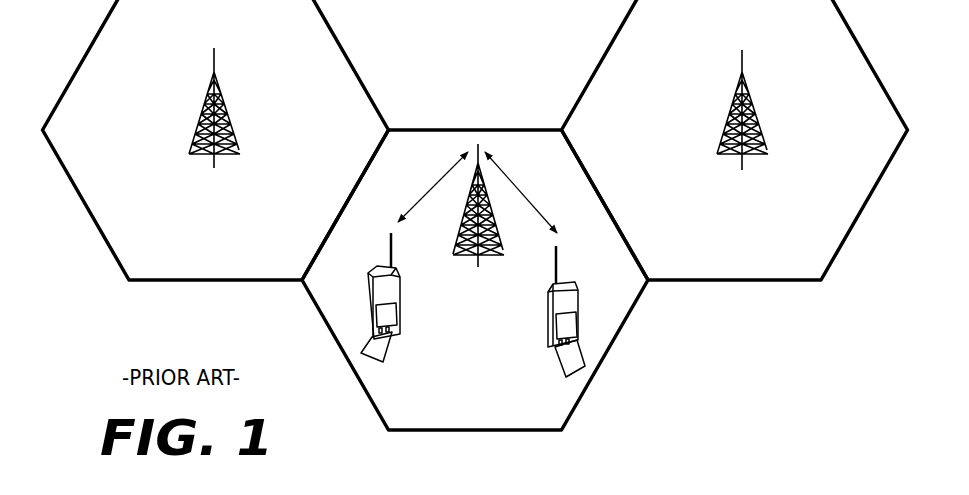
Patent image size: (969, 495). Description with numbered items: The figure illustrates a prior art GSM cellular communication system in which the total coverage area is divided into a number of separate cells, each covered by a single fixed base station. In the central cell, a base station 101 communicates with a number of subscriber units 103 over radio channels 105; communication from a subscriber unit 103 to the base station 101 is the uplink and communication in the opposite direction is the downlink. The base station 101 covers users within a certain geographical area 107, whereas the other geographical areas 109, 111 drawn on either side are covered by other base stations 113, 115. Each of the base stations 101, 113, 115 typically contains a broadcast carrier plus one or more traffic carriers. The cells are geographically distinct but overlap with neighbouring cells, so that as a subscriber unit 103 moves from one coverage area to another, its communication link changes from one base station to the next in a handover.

The base station 101 is at (470, 252).
The subscriber units 103 is at (370, 280).
The radio channels 105 is at (440, 183).
The geographical area 107 is at (496, 415).
The geographical area 109 is at (233, 267).
The geographical area 111 is at (760, 260).
The base station 113 is at (208, 162).
The base station 115 is at (765, 140).